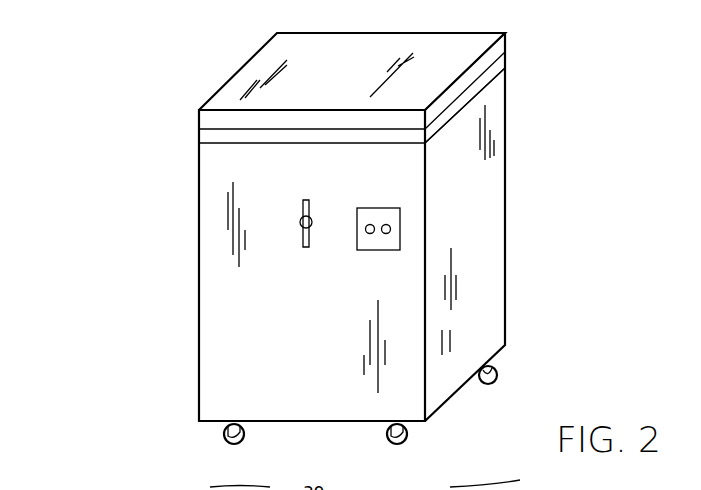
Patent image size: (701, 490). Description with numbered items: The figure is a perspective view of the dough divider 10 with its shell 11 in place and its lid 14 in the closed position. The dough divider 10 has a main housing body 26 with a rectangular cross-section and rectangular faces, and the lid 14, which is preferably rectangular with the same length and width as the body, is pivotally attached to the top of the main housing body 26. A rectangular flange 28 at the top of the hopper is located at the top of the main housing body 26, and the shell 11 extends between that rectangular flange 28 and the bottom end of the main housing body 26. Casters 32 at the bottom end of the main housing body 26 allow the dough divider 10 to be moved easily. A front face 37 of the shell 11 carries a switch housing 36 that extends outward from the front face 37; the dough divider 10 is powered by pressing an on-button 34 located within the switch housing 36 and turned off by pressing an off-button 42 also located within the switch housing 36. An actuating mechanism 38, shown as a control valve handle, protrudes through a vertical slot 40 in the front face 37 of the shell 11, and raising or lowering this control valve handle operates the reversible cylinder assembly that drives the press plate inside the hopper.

The dough divider 10 is at (168, 112).
The shell 11 is at (493, 217).
The lid 14 is at (470, 27).
The main housing body 26 is at (198, 246).
The rectangular flange 28 is at (486, 78).
The casters 32 is at (228, 447).
The on-button 34 is at (386, 205).
The switch housing 36 is at (401, 240).
The front face 37 is at (232, 340).
The actuating mechanism 38 is at (300, 220).
The vertical slot 40 is at (306, 248).
The off-button 42 is at (370, 206).